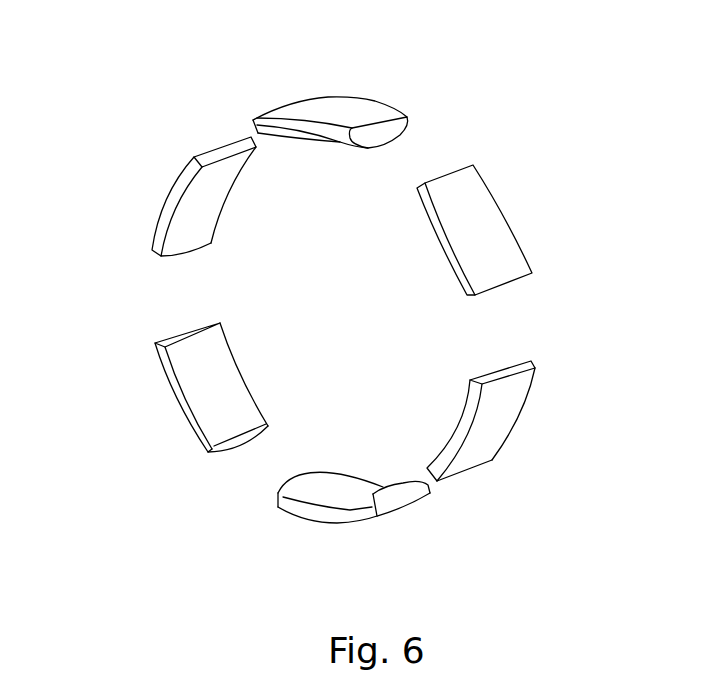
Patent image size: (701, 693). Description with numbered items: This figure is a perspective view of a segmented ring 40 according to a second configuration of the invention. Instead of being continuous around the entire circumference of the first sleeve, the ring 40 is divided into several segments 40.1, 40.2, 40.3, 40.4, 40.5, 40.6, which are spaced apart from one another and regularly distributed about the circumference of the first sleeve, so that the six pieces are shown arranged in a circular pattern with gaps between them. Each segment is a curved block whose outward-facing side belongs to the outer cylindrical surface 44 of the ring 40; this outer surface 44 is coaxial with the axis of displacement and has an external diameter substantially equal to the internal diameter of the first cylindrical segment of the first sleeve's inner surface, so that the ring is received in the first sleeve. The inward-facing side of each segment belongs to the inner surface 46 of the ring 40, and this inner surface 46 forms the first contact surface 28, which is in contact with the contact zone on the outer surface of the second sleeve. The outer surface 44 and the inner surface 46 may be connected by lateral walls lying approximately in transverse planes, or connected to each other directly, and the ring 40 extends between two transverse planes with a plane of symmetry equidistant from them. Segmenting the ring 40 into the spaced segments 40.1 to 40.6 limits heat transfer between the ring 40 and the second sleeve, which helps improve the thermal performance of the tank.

The ring 40 is at (147, 183).
The segment 40.1 is at (340, 143).
The segment 40.2 is at (488, 227).
The segment 40.3 is at (495, 427).
The segment 40.4 is at (328, 523).
The segment 40.5 is at (186, 410).
The segment 40.6 is at (156, 226).
The outer cylindrical surface 44 is at (182, 172).
The inner surface 46 is at (337, 487).
The first contact surface 28 is at (217, 202).